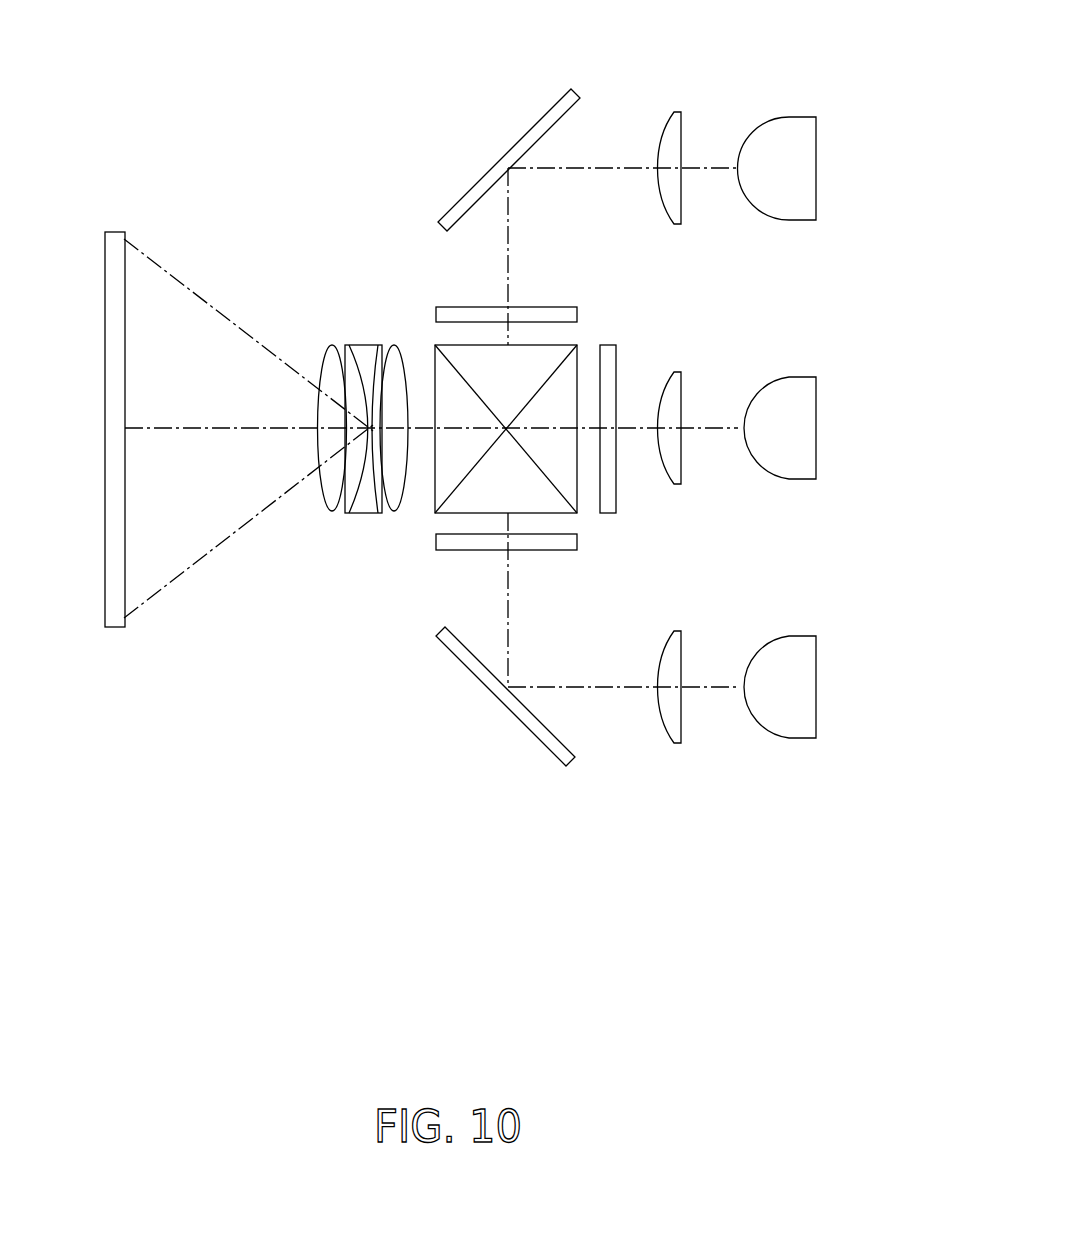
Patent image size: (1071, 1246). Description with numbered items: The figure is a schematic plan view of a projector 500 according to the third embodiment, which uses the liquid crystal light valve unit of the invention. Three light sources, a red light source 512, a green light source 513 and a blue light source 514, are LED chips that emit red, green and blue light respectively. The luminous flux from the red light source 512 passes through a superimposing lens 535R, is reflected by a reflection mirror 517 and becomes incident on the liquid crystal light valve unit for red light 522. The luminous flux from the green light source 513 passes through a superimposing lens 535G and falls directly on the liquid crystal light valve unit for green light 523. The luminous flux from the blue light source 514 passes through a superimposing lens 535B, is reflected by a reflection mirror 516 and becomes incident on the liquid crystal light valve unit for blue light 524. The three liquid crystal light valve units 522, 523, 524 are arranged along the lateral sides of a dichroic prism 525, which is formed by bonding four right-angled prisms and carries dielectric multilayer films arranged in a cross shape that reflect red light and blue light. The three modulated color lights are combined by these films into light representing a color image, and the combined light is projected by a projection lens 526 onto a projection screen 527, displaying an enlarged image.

The projector 500 is at (183, 63).
The red light source 512 is at (834, 200).
The green light source 513 is at (835, 460).
The blue light source 514 is at (833, 720).
The reflection mirror 516 is at (543, 748).
The reflection mirror 517 is at (545, 110).
The liquid crystal light valve unit for red light 522 is at (557, 307).
The liquid crystal light valve unit for green light 523 is at (612, 345).
The liquid crystal light valve unit for blue light 524 is at (436, 538).
The dichroic prism 525 is at (440, 493).
The projection lens 526 is at (402, 338).
The projection screen 527 is at (105, 365).
The superimposing lens 535R is at (680, 112).
The superimposing lens 535G is at (680, 372).
The superimposing lens 535B is at (680, 631).